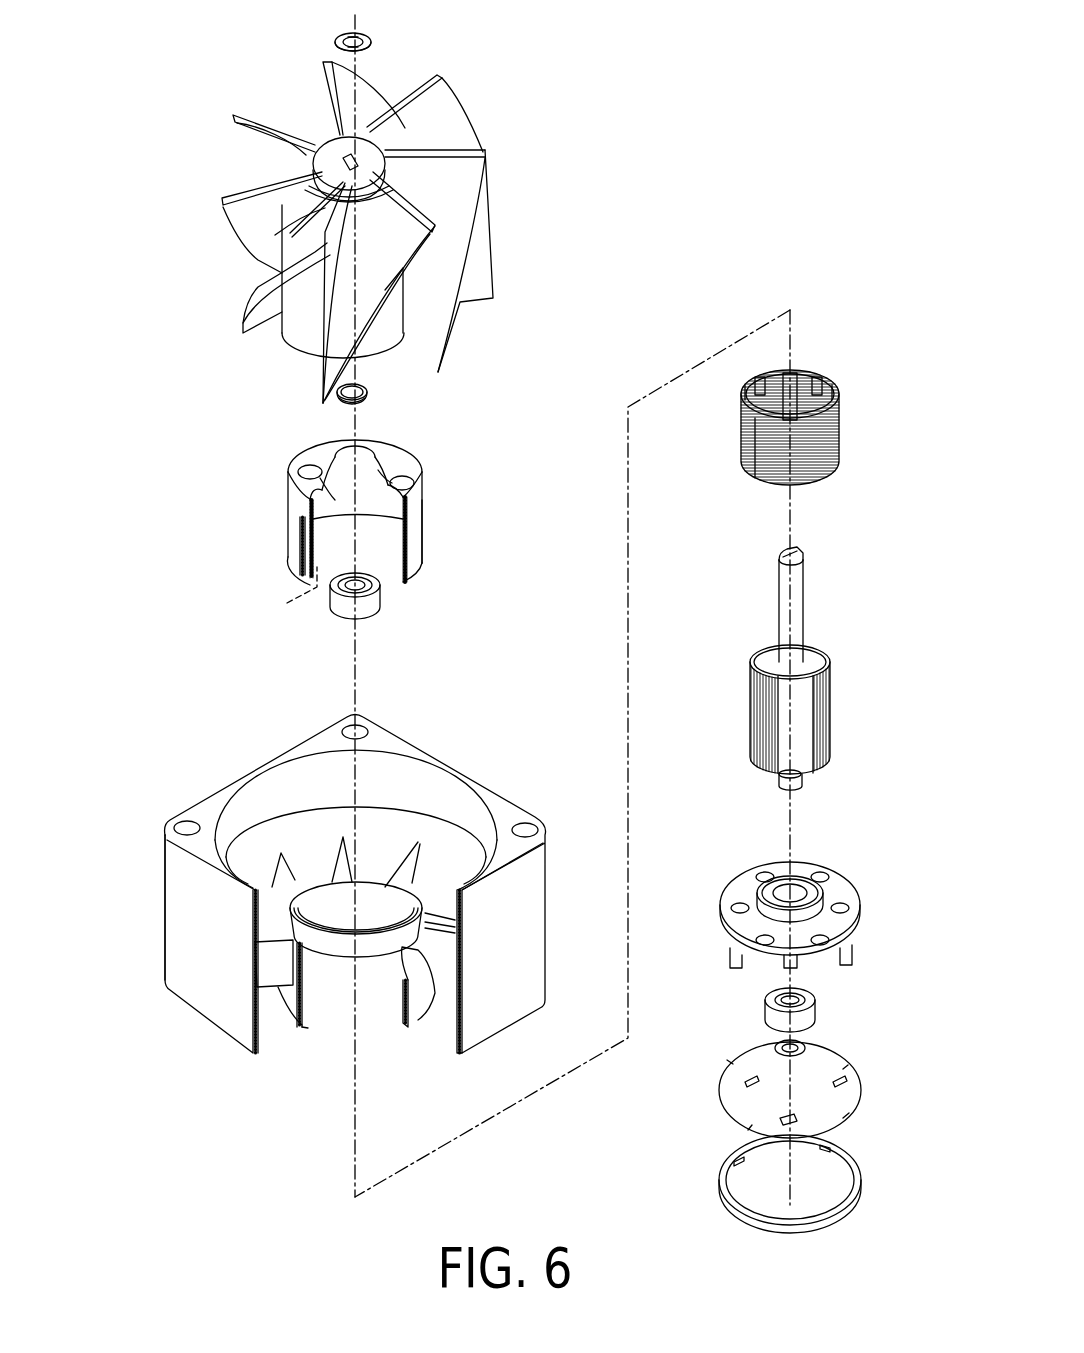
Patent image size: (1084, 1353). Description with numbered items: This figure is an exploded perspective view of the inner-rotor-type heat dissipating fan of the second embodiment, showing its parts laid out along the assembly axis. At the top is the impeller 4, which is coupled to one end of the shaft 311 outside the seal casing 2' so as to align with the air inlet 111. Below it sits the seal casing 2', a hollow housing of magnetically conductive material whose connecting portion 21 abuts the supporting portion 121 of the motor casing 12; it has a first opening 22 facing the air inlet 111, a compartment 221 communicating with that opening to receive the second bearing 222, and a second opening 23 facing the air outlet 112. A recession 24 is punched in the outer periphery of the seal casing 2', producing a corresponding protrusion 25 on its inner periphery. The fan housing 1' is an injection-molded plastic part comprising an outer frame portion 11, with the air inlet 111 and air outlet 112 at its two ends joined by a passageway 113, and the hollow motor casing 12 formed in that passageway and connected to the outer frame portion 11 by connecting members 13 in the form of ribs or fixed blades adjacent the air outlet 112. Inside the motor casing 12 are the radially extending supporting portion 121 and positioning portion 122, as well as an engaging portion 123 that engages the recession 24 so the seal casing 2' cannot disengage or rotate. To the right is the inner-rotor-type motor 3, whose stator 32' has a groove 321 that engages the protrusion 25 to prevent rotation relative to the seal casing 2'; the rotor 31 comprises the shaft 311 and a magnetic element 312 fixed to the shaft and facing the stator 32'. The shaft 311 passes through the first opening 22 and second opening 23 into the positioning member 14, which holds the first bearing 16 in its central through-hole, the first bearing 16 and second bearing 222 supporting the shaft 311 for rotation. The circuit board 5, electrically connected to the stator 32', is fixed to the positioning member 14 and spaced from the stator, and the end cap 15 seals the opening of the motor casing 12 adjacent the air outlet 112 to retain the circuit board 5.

The impeller 4 is at (473, 180).
The seal casing 2' is at (352, 549).
The first opening 22 is at (372, 455).
The compartment 221 is at (340, 478).
The recession 24 is at (302, 527).
The connecting portion 21 is at (413, 573).
The protrusion 25 is at (284, 602).
The second opening 23 is at (390, 567).
The second bearing 222 is at (370, 605).
The fan housing 1' is at (329, 920).
The air inlet 111 is at (458, 786).
The passageway 113 is at (295, 833).
The engaging portion 123 is at (292, 922).
The outer frame portion 11 is at (188, 1000).
The connecting members 13 is at (274, 981).
The air outlet 112 is at (283, 1038).
The supporting portion 121 is at (403, 990).
The positioning portion 122 is at (423, 1000).
The motor casing 12 is at (460, 1033).
The inner-rotor-type motor 3 is at (805, 580).
The stator 32' is at (786, 439).
The groove 321 is at (740, 457).
The rotor 31 is at (831, 640).
The shaft 311 is at (800, 620).
The magnetic element 312 is at (827, 705).
The positioning member 14 is at (837, 883).
The first bearing 16 is at (810, 1017).
The circuit board 5 is at (850, 1092).
The end cap 15 is at (847, 1147).